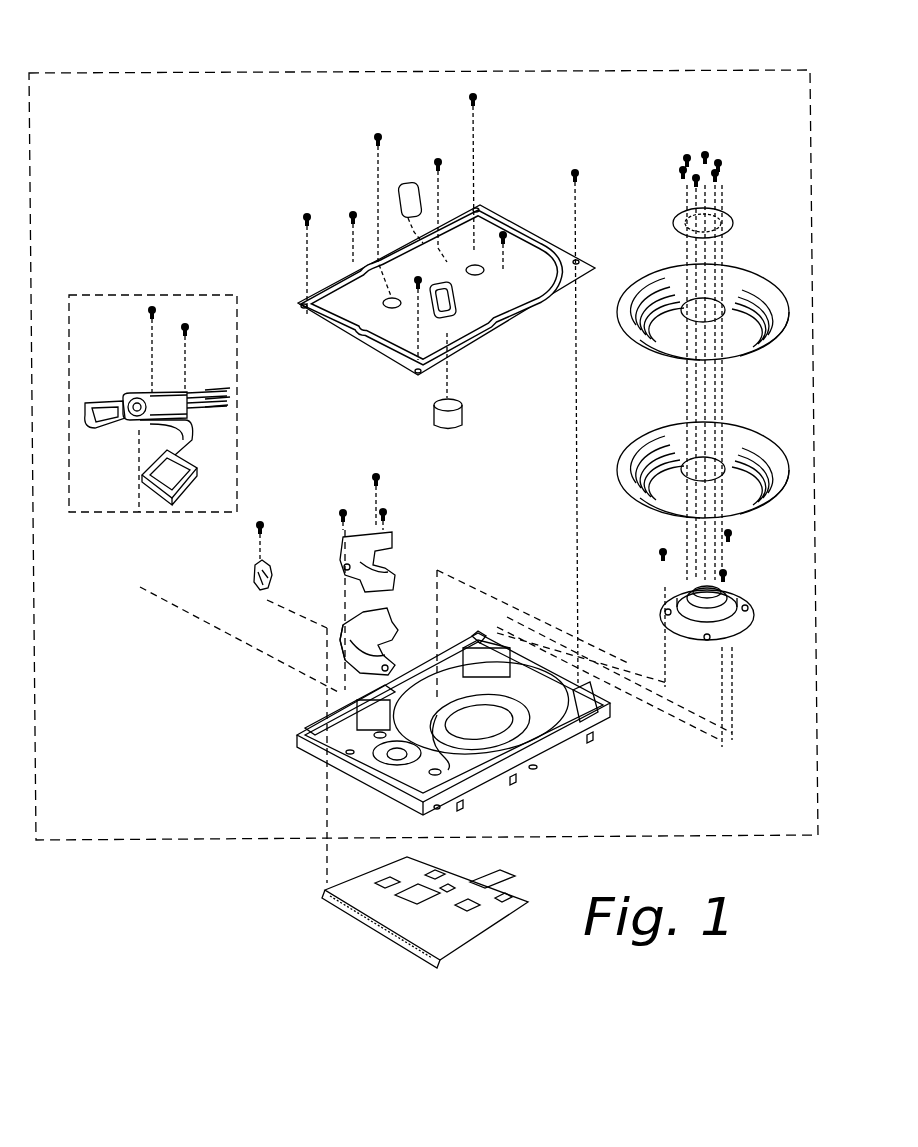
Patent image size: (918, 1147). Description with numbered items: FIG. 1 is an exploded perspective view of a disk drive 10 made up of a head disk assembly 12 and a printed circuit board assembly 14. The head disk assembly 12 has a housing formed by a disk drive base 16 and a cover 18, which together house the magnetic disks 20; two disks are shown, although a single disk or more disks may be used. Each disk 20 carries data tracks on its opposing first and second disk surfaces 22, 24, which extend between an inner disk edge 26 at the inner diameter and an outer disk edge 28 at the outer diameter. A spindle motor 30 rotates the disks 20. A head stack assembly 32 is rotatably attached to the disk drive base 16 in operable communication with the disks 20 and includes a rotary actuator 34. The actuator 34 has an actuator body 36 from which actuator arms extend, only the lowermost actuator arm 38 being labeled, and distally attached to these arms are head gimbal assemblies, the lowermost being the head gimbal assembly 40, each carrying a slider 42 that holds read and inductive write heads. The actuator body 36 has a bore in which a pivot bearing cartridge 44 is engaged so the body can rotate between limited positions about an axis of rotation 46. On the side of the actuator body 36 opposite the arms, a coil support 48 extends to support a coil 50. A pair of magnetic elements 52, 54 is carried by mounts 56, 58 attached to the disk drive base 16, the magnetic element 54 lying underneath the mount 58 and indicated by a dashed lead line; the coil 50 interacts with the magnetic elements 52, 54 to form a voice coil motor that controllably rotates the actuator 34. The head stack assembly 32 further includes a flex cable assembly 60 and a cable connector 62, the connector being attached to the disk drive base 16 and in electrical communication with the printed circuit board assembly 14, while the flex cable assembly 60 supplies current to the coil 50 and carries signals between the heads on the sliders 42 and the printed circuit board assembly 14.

The disk drive 10 is at (225, 53).
The head disk assembly 12 is at (177, 838).
The printed circuit board assembly 14 is at (510, 905).
The disk drive base 16 is at (497, 792).
The cover 18 is at (525, 293).
The magnetic disk 20 is at (662, 282).
The first disk surface 22 is at (765, 295).
The second disk surface 24 is at (748, 345).
The inner disk edge 26 is at (681, 311).
The outer disk edge 28 is at (656, 360).
The spindle motor 30 is at (740, 608).
The head stack assembly 32 is at (183, 293).
The rotary actuator 34 is at (145, 393).
The actuator body 36 is at (122, 395).
The actuator arm 38 is at (205, 408).
The head gimbal assembly 40 is at (212, 400).
The slider 42 is at (215, 392).
The pivot bearing cartridge 44 is at (130, 395).
The axis of rotation 46 is at (140, 620).
The coil support 48 is at (96, 428).
The coil 50 is at (85, 410).
The magnetic element 52 is at (341, 641).
The magnetic element 54 is at (365, 574).
The mount 56 is at (386, 622).
The mount 58 is at (345, 546).
The flex cable assembly 60 is at (192, 437).
The cable connector 62 is at (198, 472).